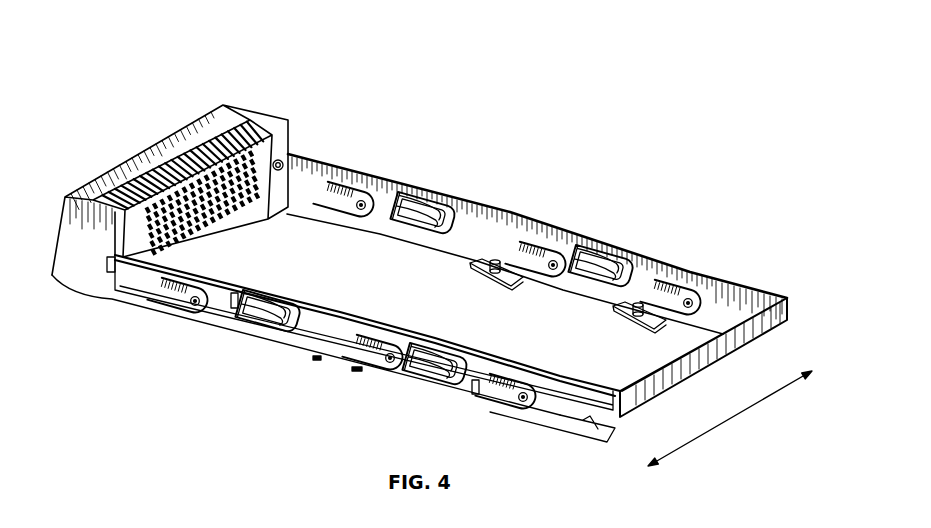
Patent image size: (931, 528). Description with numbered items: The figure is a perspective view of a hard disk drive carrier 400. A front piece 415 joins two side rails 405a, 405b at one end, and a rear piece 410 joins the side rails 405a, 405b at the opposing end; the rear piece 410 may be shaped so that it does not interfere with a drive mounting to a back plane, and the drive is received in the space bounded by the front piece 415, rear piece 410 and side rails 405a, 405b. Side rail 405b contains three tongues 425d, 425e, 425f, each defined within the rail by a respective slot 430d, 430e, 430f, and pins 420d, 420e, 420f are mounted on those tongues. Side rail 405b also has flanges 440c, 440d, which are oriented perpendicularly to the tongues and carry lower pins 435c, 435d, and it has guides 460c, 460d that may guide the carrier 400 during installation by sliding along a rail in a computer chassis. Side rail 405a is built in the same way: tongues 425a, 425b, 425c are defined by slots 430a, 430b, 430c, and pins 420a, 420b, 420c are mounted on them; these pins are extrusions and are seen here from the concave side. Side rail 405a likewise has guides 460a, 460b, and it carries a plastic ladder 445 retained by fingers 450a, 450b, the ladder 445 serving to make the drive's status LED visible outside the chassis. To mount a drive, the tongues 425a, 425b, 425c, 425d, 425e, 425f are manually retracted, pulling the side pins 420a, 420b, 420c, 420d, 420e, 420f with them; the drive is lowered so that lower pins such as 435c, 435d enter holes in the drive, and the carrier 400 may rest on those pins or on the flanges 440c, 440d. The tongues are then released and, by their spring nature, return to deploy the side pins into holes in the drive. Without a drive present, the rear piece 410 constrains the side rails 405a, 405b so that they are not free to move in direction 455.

The carrier 400 is at (189, 67).
The side rail 405a is at (572, 409).
The side rail 405b is at (760, 298).
The rear piece 410 is at (694, 369).
The front piece 415 is at (286, 150).
The pin 420a is at (214, 289).
The pin 420b is at (403, 341).
The pin 420c is at (540, 388).
The pin 420d is at (362, 200).
The pin 420e is at (556, 261).
The pin 420f is at (690, 298).
The tongue 425a is at (165, 292).
The tongue 425b is at (353, 347).
The tongue 425c is at (503, 393).
The tongue 425d is at (327, 190).
The tongue 425e is at (517, 246).
The tongue 425f is at (657, 274).
The slot 430a is at (214, 282).
The slot 430b is at (401, 373).
The slot 430c is at (538, 413).
The slot 430d is at (338, 176).
The slot 430e is at (547, 247).
The slot 430f is at (672, 272).
The pin 435c is at (488, 282).
The pin 435d is at (618, 318).
The flange 440c is at (482, 262).
The flange 440d is at (615, 300).
The plastic ladder 445 is at (594, 437).
The finger 450a is at (234, 306).
The finger 450b is at (476, 395).
The direction 455 is at (708, 440).
The guide 460a is at (281, 334).
The guide 460b is at (434, 377).
The guide 460c is at (420, 187).
The guide 460d is at (596, 246).